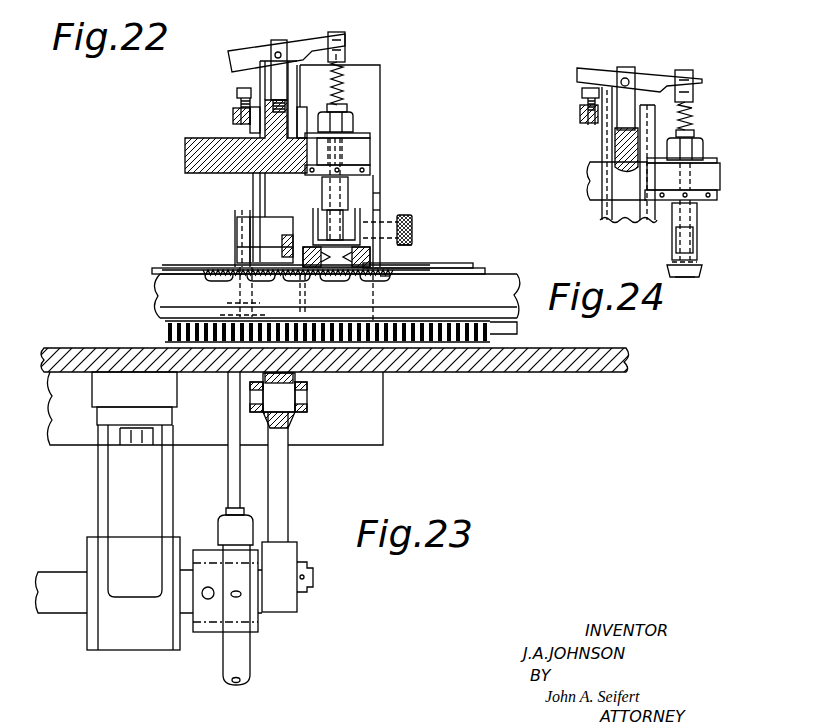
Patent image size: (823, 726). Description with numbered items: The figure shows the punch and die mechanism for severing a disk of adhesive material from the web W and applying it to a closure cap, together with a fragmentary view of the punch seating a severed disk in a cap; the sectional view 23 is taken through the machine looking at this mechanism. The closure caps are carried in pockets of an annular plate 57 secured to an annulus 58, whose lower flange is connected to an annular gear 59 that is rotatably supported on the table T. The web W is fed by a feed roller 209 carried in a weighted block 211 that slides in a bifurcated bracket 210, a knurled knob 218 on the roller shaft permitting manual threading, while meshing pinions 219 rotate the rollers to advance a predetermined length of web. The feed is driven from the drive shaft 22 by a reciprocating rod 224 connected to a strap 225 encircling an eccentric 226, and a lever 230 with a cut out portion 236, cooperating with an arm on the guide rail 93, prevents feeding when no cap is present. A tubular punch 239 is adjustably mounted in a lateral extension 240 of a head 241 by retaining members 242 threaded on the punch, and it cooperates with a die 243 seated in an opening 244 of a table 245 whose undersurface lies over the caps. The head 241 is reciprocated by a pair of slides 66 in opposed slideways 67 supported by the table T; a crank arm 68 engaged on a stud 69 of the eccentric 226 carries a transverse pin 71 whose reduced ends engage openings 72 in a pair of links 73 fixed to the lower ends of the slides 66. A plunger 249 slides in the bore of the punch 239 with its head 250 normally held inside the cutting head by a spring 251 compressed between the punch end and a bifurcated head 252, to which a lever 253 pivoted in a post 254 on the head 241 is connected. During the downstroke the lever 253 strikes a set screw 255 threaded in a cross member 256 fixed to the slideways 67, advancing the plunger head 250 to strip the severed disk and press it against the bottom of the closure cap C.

In FIG. 23, the drive shaft 22 is at (57, 604).
In FIG. 23, the bearing housing 23 is at (100, 492).
In FIG. 22, the annular plate 57 is at (480, 272).
In FIG. 22, the annulus 58 is at (505, 291).
In FIG. 22, the annular gear 59 is at (500, 334).
In FIG. 22, the slides 66 is at (270, 182).
In FIG. 24, the slides 66 is at (627, 218).
In FIG. 22, the slideways 67 is at (258, 133).
In FIG. 24, the slideways 67 is at (602, 218).
In FIG. 23, the crank arm 68 is at (287, 494).
In FIG. 23, the stud 69 is at (313, 574).
In FIG. 23, the transverse pin 71 is at (283, 398).
In FIG. 23, the openings 72 is at (307, 404).
In FIG. 23, the lever bars or links 73 is at (250, 386).
In FIG. 22, the guide rail 93 is at (450, 266).
In FIG. 22, the feed roller 209 is at (381, 210).
In FIG. 22, the bifurcated bracket 210 is at (381, 193).
In FIG. 22, the weighted block 211 is at (368, 97).
In FIG. 22, the knurled knob 218 is at (413, 224).
In FIG. 22, the pinions 219 is at (236, 214).
In FIG. 23, the reciprocating rod 224 is at (235, 477).
In FIG. 23, the strap 225 is at (243, 629).
In FIG. 23, the eccentric 226 is at (220, 634).
In FIG. 22, the lever 230 is at (237, 251).
In FIG. 22, the cut out portion 236 is at (282, 250).
In FIG. 22, the tubular punch 239 is at (325, 194).
In FIG. 24, the tubular punch 239 is at (698, 224).
In FIG. 22, the lateral extension 240 is at (372, 151).
In FIG. 24, the lateral extension 240 is at (712, 176).
In FIG. 22, the head 241 is at (183, 157).
In FIG. 24, the head 241 is at (583, 179).
In FIG. 22, the retaining members 242 is at (355, 124).
In FIG. 24, the retaining members 242 is at (704, 146).
In FIG. 22, the die 243 is at (413, 243).
In FIG. 22, the opening 244 is at (334, 276).
In FIG. 22, the table 245 is at (298, 276).
In FIG. 22, the plunger 249 is at (348, 104).
In FIG. 24, the plunger 249 is at (695, 115).
In FIG. 22, the plunger head 250 is at (362, 218).
In FIG. 24, the plunger head 250 is at (702, 268).
In FIG. 22, the spring 251 is at (341, 82).
In FIG. 24, the spring 251 is at (690, 106).
In FIG. 22, the bifurcated head 252 is at (347, 44).
In FIG. 24, the bifurcated head 252 is at (694, 90).
In FIG. 22, the lever 253 is at (242, 57).
In FIG. 24, the lever 253 is at (588, 72).
In FIG. 22, the post 254 is at (274, 40).
In FIG. 24, the post 254 is at (627, 67).
In FIG. 22, the set screw 255 is at (240, 92).
In FIG. 24, the set screw 255 is at (582, 93).
In FIG. 22, the cross member 256 is at (236, 118).
In FIG. 24, the cross member 256 is at (580, 115).
In FIG. 22, the cup C is at (382, 278).
In FIG. 24, the cup C is at (699, 273).
In FIG. 22, the web W is at (299, 258).
In FIG. 23, the table T is at (77, 348).